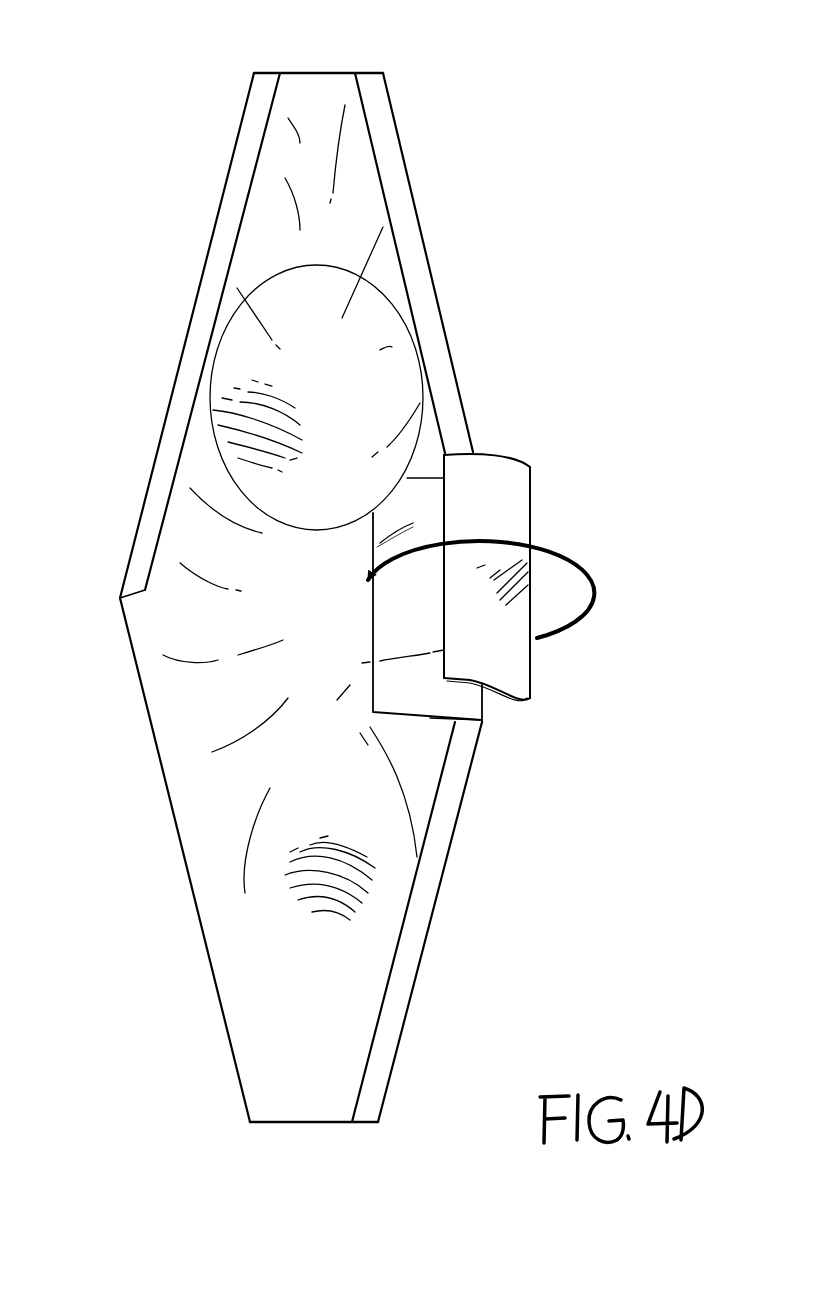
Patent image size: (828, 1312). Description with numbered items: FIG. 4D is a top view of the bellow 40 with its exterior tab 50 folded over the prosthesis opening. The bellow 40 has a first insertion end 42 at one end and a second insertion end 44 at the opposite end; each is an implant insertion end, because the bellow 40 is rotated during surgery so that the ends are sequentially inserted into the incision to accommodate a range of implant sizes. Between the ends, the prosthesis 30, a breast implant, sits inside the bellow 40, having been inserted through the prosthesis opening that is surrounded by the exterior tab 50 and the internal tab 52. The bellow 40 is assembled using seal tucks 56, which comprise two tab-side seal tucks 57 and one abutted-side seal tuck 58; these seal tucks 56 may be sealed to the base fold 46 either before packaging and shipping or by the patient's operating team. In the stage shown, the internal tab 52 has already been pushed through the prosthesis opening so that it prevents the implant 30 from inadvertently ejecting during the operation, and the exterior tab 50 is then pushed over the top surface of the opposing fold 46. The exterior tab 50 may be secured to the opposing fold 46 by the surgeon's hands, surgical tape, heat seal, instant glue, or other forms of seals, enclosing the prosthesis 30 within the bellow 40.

The bellow 40 is at (112, 222).
The first insertion end 42 is at (332, 58).
The second insertion end 44 is at (300, 1128).
The tab-side seal tuck 57 is at (395, 127).
The abutted-side seal tuck 58 is at (228, 198).
The seal tucks 56 is at (440, 334).
The prosthesis 30 is at (301, 262).
The base fold 46 is at (330, 571).
The internal tab 52 is at (388, 630).
The exterior tab 50 is at (530, 510).